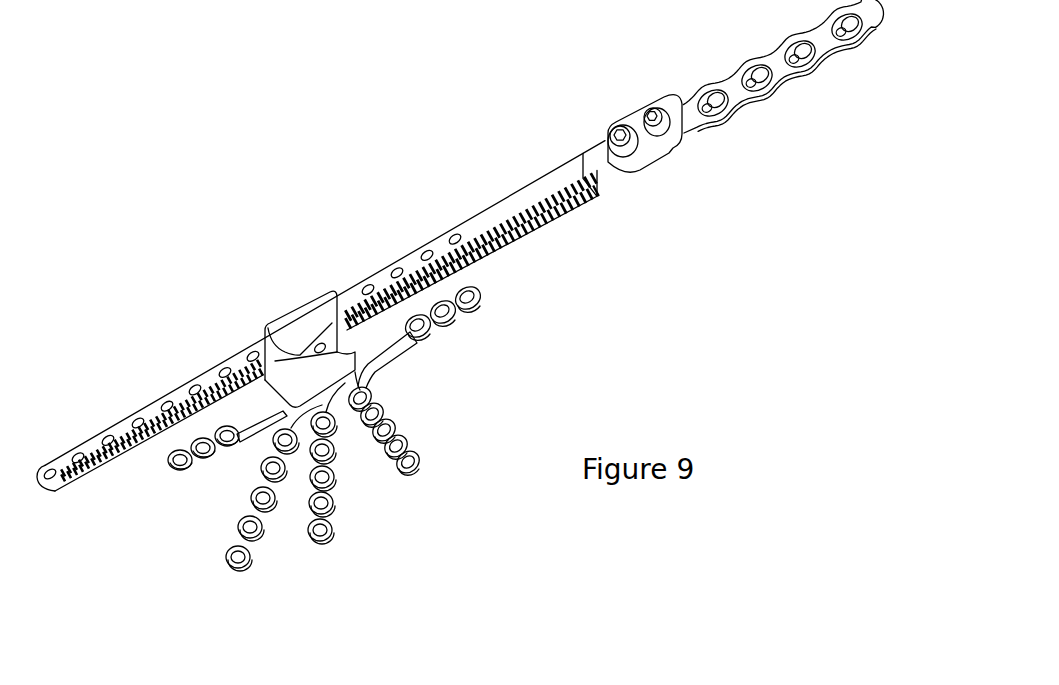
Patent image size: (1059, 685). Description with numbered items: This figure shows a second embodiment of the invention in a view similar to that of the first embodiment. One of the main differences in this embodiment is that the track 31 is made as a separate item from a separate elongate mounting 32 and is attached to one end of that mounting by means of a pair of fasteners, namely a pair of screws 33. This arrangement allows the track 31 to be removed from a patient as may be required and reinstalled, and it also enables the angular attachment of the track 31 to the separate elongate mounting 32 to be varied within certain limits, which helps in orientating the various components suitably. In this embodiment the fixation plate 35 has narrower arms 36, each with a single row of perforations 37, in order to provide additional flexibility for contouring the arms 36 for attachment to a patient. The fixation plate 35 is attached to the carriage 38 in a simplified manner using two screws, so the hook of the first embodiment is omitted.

The track 31 is at (377, 277).
The separate elongate mounting 32 is at (780, 95).
The screws 33 is at (620, 128).
The fixation plate 35 is at (372, 372).
The arms 36 is at (275, 482).
The perforations 37 is at (410, 457).
The carriage 38 is at (298, 343).